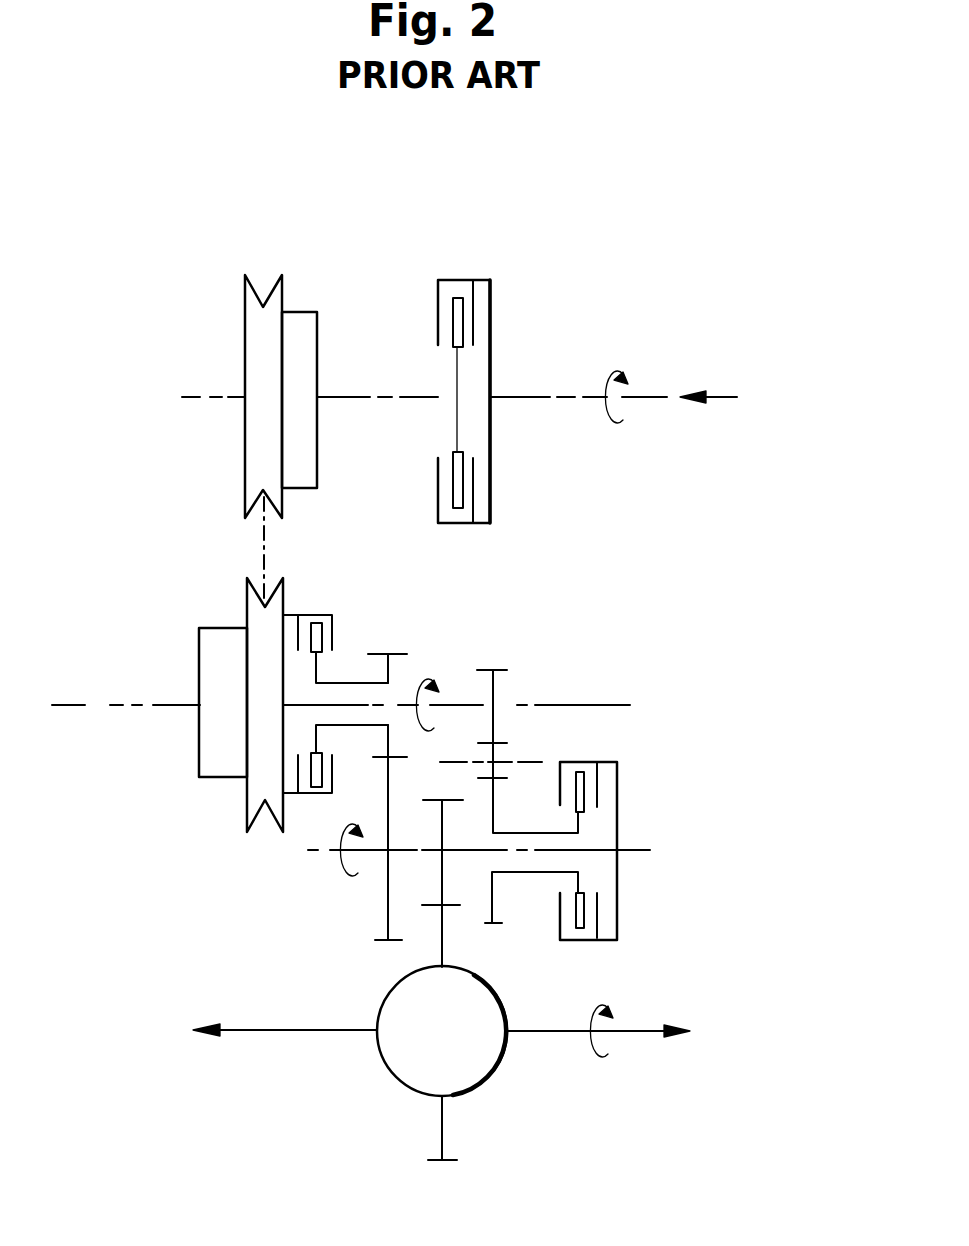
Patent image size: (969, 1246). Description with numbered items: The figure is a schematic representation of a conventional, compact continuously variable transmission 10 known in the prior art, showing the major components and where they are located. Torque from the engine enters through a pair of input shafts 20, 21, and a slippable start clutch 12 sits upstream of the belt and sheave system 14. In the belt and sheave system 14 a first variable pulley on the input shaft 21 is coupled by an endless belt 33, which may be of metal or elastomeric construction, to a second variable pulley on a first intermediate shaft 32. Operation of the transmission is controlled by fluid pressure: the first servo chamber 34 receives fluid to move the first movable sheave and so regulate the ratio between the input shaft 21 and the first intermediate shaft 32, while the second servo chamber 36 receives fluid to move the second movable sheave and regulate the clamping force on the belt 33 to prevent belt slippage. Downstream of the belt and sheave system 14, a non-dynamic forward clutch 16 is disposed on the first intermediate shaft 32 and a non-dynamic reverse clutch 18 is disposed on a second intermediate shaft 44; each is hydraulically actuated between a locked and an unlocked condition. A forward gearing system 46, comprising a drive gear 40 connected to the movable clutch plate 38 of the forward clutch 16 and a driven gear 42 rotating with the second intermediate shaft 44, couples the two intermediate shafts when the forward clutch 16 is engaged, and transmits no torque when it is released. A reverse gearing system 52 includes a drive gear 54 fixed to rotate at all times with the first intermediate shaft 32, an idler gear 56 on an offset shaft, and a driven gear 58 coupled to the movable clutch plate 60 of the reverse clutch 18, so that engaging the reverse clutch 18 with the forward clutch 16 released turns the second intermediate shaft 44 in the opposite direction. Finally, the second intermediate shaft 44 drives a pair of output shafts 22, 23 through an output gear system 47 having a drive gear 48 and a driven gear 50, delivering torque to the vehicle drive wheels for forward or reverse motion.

The continuously variable transmission 10 is at (662, 331).
The slippable start clutch 12 is at (491, 281).
The belt and sheave system 14 is at (238, 321).
The forward clutch 16 is at (310, 611).
The reverse clutch 18 is at (622, 829).
The input shaft 20 is at (655, 400).
The input shaft 21 is at (349, 397).
The output shaft 22 is at (645, 1030).
The output shaft 23 is at (333, 1030).
The first intermediate shaft 32 is at (177, 705).
The endless belt 33 is at (260, 522).
The first servo chamber 34 is at (300, 325).
The second servo chamber 36 is at (208, 647).
The movable clutch plate 38 is at (463, 326).
The drive gear 40 is at (390, 671).
The driven gear 42 is at (385, 883).
The second intermediate shaft 44 is at (630, 853).
The forward gearing system 46 is at (417, 639).
The output gear system 47 is at (447, 1165).
The drive gear 48 is at (442, 887).
The driven gear 50 is at (442, 1122).
The reverse gearing system 52 is at (513, 663).
The drive gear 54 is at (493, 690).
The idler gear 56 is at (493, 752).
The driven gear 58 is at (492, 902).
The movable clutch plate 60 is at (587, 793).